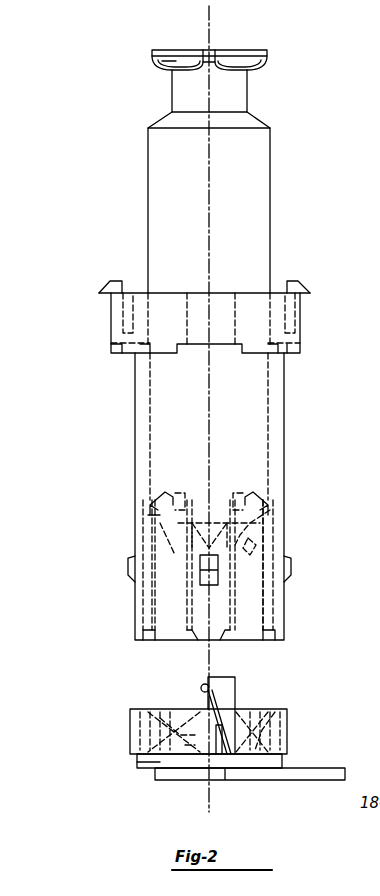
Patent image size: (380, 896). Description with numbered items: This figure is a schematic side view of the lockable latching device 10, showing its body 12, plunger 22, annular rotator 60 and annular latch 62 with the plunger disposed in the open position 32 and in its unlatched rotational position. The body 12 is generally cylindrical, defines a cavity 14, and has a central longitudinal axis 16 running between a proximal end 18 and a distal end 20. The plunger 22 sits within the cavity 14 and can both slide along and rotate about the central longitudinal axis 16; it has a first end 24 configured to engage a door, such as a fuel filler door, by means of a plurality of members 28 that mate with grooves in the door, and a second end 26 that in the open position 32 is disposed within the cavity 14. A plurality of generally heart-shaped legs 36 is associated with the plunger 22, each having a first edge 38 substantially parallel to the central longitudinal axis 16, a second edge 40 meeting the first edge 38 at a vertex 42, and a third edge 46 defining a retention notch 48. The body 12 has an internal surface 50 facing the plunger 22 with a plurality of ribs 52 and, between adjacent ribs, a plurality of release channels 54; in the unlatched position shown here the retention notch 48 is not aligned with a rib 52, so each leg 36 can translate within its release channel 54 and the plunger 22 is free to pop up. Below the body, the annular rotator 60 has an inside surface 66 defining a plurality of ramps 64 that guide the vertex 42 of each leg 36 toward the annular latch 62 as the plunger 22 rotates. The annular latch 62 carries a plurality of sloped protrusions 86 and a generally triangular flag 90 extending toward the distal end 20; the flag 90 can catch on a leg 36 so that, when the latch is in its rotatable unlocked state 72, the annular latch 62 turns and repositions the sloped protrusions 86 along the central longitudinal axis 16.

The lockable latching device 10 is at (124, 35).
The body 12 is at (285, 452).
The cavity 14 is at (162, 655).
The central longitudinal axis 16 is at (209, 30).
The proximal end 18 is at (104, 324).
The distal end 20 is at (112, 632).
The plunger 22 is at (271, 162).
The first end 24 is at (132, 61).
The second end 26 is at (112, 517).
The plurality of members 28 is at (158, 62).
The open position 32 is at (108, 381).
The plurality of legs 36 is at (148, 522).
The first edge 38 is at (190, 505).
The second edge 40 is at (245, 555).
The vertex 42 is at (178, 552).
The third edge 46 is at (253, 490).
The retention notch 48 is at (154, 492).
The internal surface 50 is at (276, 372).
The plurality of ribs 52 is at (200, 689).
The plurality of release channels 54 is at (245, 620).
The annular rotator 60 is at (288, 735).
The annular latch 62 is at (152, 770).
The plurality of ramps 64 is at (170, 716).
The inside surface 66 is at (277, 712).
The unlocked state 72 is at (268, 565).
The plurality of sloped protrusions 86 is at (190, 760).
The flag 90 is at (237, 694).